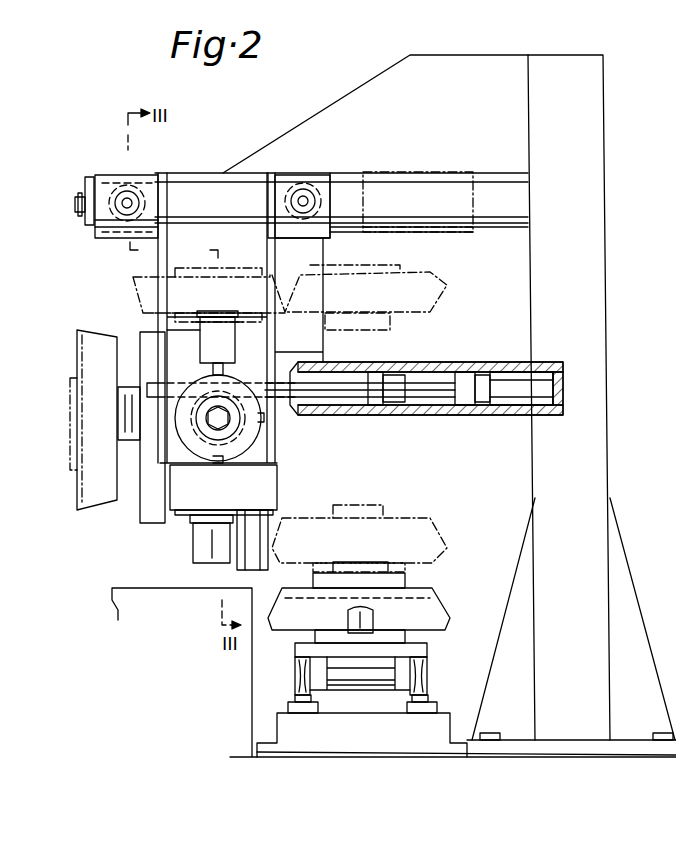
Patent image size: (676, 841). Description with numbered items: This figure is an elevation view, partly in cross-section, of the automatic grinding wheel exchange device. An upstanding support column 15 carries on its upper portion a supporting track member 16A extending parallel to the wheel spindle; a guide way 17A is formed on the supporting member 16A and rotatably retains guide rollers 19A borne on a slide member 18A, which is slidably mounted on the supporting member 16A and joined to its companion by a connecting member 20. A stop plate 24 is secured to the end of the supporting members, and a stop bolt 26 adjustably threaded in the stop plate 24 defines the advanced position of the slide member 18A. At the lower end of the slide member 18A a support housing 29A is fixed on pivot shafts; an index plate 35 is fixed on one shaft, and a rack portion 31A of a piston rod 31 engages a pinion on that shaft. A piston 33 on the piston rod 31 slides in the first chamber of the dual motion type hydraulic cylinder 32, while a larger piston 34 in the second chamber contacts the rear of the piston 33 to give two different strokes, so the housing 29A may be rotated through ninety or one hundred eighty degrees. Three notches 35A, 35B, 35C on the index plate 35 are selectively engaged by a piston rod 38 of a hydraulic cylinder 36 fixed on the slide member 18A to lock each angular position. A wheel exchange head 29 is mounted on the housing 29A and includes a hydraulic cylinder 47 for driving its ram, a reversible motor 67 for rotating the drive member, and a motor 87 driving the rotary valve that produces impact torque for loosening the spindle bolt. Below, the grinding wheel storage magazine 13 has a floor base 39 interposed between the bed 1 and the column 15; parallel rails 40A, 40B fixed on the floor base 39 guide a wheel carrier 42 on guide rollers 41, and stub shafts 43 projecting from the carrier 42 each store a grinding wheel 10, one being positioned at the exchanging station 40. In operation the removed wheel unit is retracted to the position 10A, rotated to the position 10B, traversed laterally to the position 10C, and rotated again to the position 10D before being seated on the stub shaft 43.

The bed 1 is at (155, 683).
The grinding wheel 10 is at (440, 565).
The wheel unit position 10A is at (77, 492).
The wheel unit position 10B is at (133, 290).
The wheel unit position 10C is at (430, 300).
The wheel unit position 10D is at (435, 530).
The grinding wheel storage magazine 13 is at (435, 628).
The support column 15 is at (598, 287).
The supporting track member 16A is at (500, 223).
The guide way 17A is at (496, 182).
The slide member 18A is at (400, 172).
The guide roller 19A is at (115, 178).
The connecting member 20 is at (330, 230).
The stop plate 24 is at (85, 185).
The stop bolt 26 is at (75, 205).
The wheel exchange head 29 is at (95, 305).
The support housing 29A is at (175, 500).
The piston rod 31 is at (340, 405).
The rack portion 31A is at (148, 390).
The dual motion type hydraulic cylinder 32 is at (430, 415).
The piston 33 is at (384, 405).
The piston 34 is at (480, 410).
The index plate 35 is at (185, 430).
The notch 35A is at (222, 376).
The notch 35B is at (264, 418).
The notch 35C is at (222, 470).
The hydraulic cylinder 36 is at (200, 337).
The piston rod 38 is at (195, 378).
The floor base 39 is at (345, 750).
The exchanging station 40 is at (370, 588).
The rail 40A is at (288, 708).
The rail 40B is at (437, 710).
The guide roller 41 is at (295, 678).
The wheel carrier 42 is at (295, 650).
The stub shaft 43 is at (373, 612).
The hydraulic cylinder 47 is at (140, 368).
The reversible motor 67 is at (200, 540).
The motor 87 is at (265, 528).